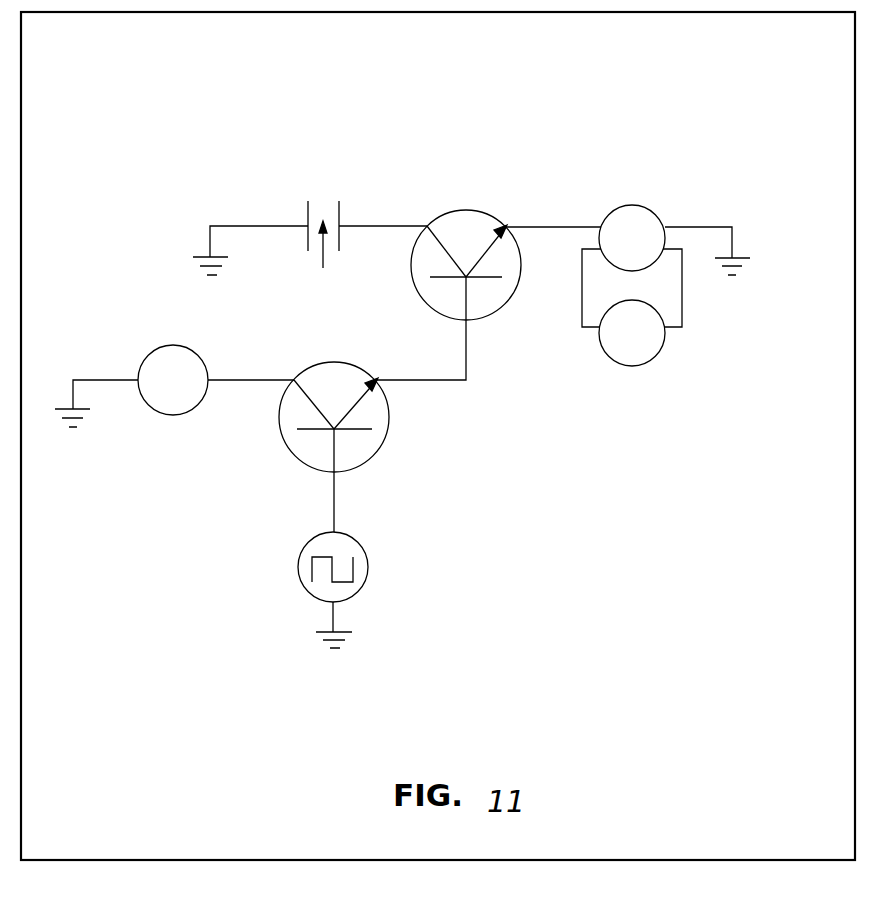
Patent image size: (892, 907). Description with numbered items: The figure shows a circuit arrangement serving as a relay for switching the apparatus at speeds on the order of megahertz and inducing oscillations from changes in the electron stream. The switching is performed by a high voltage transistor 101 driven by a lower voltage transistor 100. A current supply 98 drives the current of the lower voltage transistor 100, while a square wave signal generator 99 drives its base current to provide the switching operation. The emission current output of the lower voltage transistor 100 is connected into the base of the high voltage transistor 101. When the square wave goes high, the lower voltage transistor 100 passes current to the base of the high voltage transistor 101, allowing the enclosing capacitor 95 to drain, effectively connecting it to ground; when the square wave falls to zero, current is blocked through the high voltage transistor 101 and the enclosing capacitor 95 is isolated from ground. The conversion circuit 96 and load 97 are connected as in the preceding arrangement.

The enclosing capacitor 95 is at (307, 214).
The conversion circuit 96 is at (630, 205).
The load 97 is at (653, 363).
The current supply 98 is at (170, 415).
The square wave signal generator 99 is at (367, 587).
The lower voltage transistor 100 is at (389, 437).
The high voltage transistor 101 is at (500, 317).